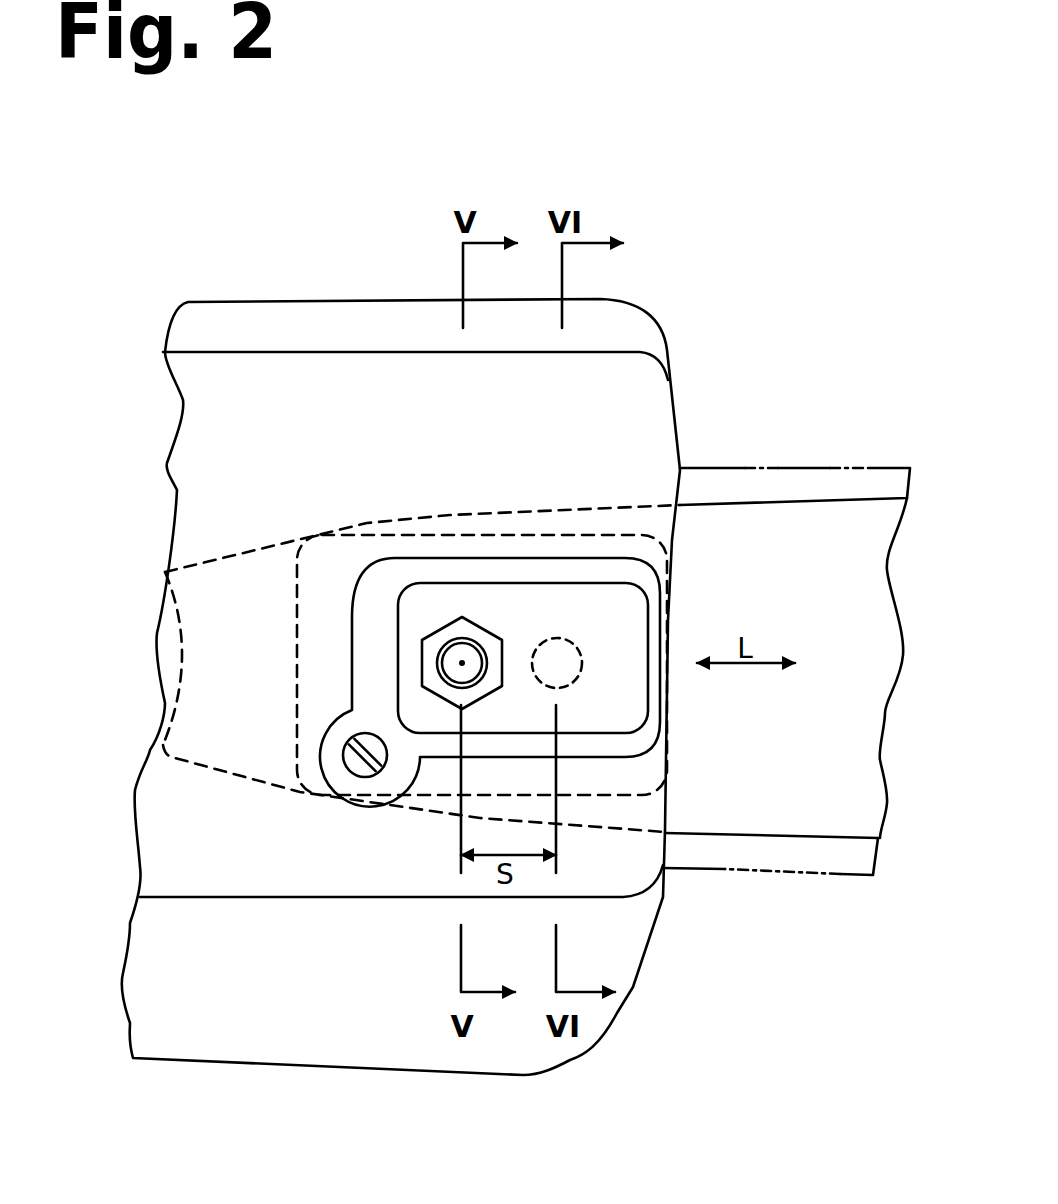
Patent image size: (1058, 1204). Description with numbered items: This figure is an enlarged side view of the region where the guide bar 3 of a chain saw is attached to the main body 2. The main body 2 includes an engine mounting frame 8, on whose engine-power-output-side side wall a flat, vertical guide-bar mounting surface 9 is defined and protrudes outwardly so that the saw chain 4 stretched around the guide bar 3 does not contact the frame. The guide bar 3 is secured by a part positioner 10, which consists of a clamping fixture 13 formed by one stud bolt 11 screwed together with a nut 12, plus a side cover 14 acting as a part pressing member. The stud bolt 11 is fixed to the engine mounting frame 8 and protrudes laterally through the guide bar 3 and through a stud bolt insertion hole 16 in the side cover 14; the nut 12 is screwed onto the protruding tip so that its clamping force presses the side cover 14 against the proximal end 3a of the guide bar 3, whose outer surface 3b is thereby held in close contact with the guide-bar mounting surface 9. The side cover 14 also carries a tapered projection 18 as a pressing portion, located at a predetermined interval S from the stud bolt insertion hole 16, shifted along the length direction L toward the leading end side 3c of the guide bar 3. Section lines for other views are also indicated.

The main body 2 is at (347, 290).
The guide bar 3 is at (785, 540).
The proximal end 3a is at (526, 510).
The outer surface 3b is at (693, 803).
The leading end side 3c is at (870, 663).
The saw chain 4 is at (830, 466).
The engine mounting frame 8 is at (290, 330).
The guide-bar mounting surface 9 is at (369, 548).
The part positioner 10 is at (630, 490).
The stud bolt 11 is at (462, 662).
The nut 12 is at (484, 640).
The clamping fixture 13 is at (448, 618).
The side cover 14 is at (340, 862).
The stud bolt insertion hole 16 is at (448, 705).
The tapered projection 18 is at (570, 642).